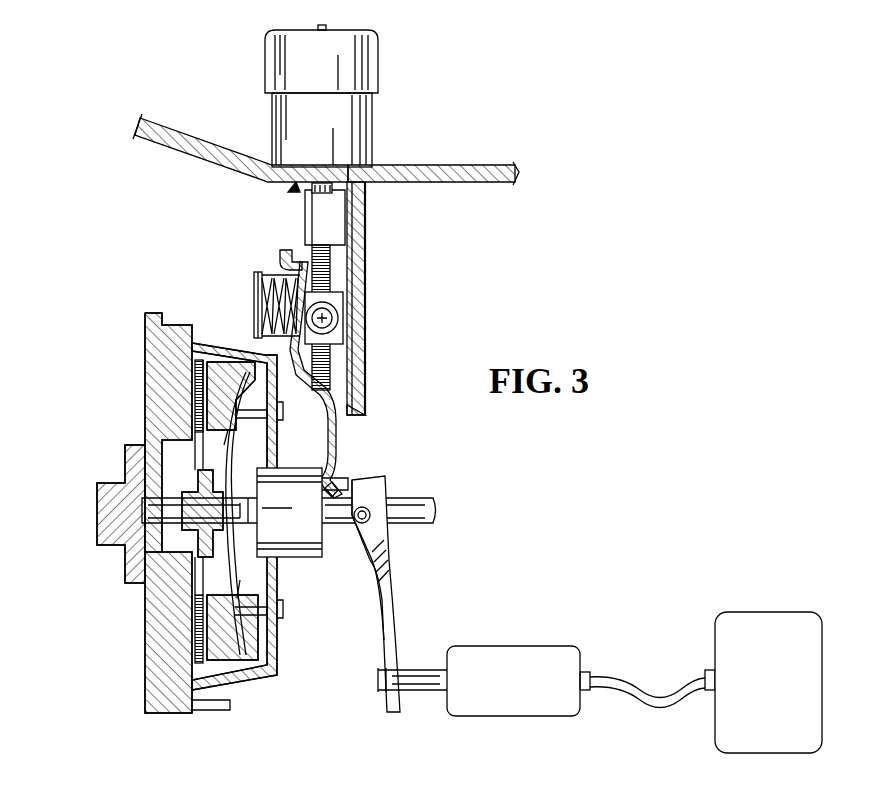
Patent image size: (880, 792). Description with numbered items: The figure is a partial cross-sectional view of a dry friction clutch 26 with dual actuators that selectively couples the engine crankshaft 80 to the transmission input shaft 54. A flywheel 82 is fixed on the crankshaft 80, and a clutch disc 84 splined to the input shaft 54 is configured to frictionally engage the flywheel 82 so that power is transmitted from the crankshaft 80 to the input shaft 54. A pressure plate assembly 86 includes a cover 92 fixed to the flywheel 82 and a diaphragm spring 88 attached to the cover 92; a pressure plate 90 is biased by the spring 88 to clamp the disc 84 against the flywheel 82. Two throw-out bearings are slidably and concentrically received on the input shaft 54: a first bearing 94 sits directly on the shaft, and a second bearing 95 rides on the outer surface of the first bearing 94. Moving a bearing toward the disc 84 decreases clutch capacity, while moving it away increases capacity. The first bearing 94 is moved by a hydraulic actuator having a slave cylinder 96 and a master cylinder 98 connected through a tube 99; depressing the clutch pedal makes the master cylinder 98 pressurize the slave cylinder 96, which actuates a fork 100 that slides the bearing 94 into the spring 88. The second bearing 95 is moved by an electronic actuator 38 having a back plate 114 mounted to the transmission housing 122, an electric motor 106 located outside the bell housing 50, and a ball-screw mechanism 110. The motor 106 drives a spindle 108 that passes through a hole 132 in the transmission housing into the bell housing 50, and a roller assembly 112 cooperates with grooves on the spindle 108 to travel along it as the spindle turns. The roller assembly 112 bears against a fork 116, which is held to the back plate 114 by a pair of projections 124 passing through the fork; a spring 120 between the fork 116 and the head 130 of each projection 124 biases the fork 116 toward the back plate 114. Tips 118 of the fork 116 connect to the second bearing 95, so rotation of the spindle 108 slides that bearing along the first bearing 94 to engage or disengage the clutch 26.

The clutch 26 is at (130, 290).
The electronic actuator 38 is at (362, 180).
The bell housing 50 is at (213, 145).
The transmission input shaft 54 is at (433, 523).
The engine crankshaft 80 is at (100, 496).
The flywheel 82 is at (158, 348).
The clutch disc 84 is at (192, 578).
The pressure plate assembly 86 is at (210, 699).
The diaphragm spring 88 is at (232, 468).
The pressure plate 90 is at (215, 397).
The cover 92 is at (240, 680).
The first bearing 94 is at (339, 558).
The second bearing 95 is at (294, 560).
The slave cylinder 96 is at (558, 646).
The master cylinder 98 is at (768, 612).
The tube 99 is at (648, 690).
The fork 100 is at (392, 598).
The electric motor 106 is at (378, 64).
The spindle 108 is at (364, 398).
The ball-screw mechanism 110 is at (330, 264).
The roller assembly 112 is at (338, 318).
The back plate 114 is at (343, 234).
The fork 116 is at (336, 440).
The tips 118 is at (350, 494).
The spring 120 is at (283, 262).
The transmission housing 122 is at (350, 228).
The projections 124 is at (272, 305).
The head 130 is at (254, 305).
The hole 132 is at (286, 189).